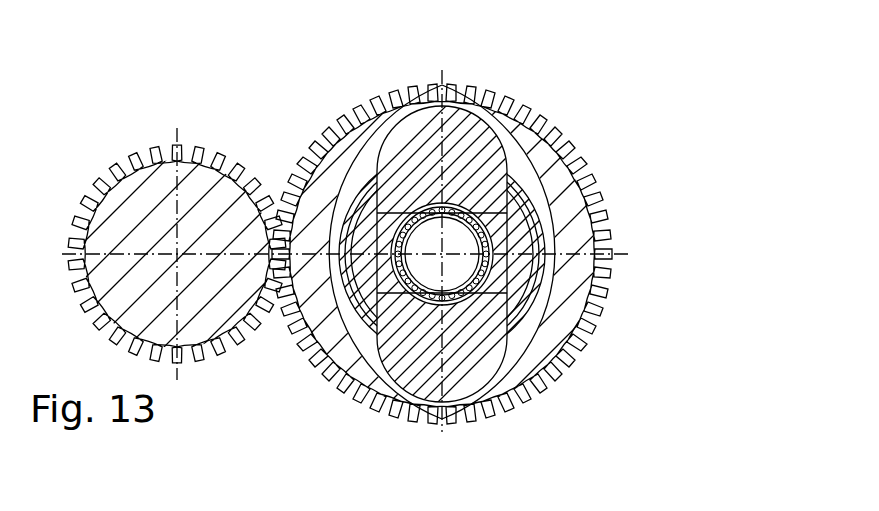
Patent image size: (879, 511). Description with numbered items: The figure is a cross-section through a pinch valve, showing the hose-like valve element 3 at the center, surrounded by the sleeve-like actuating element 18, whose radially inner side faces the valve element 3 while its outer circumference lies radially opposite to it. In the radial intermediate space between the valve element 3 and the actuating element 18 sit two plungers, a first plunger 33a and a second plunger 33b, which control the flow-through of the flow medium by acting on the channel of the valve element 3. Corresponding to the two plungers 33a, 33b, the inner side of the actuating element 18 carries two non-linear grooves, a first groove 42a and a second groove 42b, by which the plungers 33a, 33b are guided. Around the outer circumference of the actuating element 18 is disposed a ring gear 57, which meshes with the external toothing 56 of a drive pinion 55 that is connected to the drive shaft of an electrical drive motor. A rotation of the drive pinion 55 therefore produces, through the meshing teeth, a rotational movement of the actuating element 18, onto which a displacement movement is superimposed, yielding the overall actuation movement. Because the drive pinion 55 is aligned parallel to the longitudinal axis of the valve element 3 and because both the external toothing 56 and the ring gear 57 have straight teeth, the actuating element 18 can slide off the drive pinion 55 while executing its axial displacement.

The valve element 3 is at (507, 231).
The actuating element 18 is at (435, 246).
The first plunger 33a is at (413, 133).
The second plunger 33b is at (467, 377).
The first groove 42a is at (511, 128).
The second groove 42b is at (374, 376).
The drive pinion 55 is at (214, 222).
The external toothing 56 is at (237, 148).
The ring gear 57 is at (578, 134).